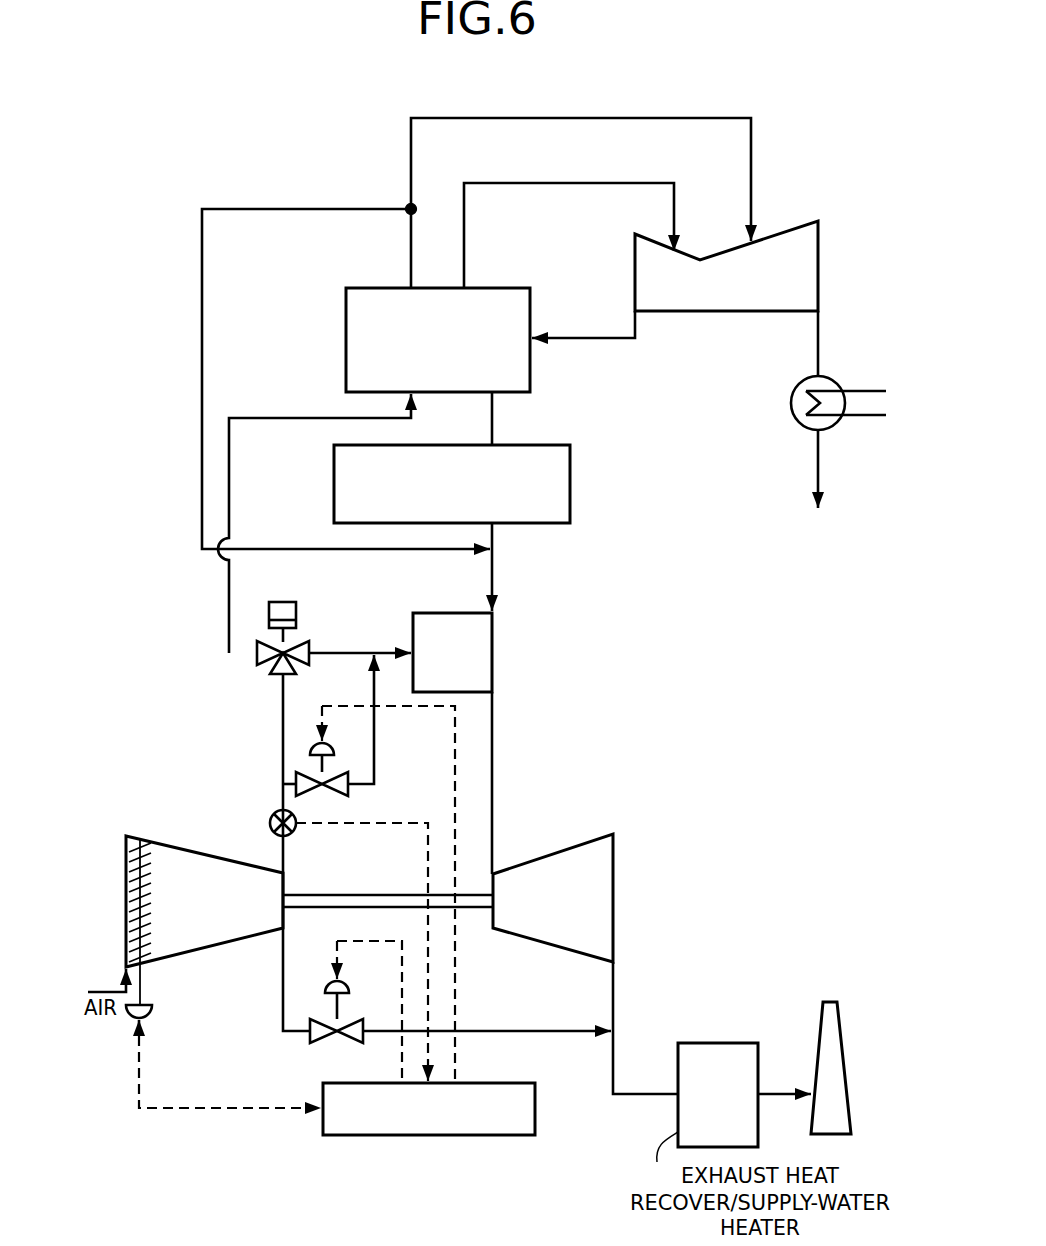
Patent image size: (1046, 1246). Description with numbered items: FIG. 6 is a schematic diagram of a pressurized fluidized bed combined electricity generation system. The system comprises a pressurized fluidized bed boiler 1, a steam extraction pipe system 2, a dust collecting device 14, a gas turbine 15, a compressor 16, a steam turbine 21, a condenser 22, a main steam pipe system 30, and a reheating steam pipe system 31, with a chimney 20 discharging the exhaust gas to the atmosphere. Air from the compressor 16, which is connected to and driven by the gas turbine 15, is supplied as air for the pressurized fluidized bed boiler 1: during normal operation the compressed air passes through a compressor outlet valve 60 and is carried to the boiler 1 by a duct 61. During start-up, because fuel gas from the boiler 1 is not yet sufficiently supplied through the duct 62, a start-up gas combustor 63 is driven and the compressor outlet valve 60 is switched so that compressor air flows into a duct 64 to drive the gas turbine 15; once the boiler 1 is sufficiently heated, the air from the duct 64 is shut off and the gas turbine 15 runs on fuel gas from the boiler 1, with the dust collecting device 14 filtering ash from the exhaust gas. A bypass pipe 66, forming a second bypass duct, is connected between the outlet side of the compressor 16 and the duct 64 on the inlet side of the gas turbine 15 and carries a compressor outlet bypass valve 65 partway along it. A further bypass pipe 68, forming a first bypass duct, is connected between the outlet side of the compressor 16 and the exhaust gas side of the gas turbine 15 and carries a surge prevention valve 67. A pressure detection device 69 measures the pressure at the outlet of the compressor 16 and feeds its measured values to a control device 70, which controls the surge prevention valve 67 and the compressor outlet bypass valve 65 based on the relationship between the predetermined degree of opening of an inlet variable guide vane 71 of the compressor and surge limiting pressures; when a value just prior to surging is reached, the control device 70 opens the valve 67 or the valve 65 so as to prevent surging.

The pressurized fluidized bed boiler 1 is at (352, 287).
The steam extraction pipe system 2 is at (202, 209).
The dust collecting device 14 is at (553, 445).
The gas turbine 15 is at (612, 862).
The compressor 16 is at (126, 883).
The chimney 20 is at (829, 1002).
The steam turbine 21 is at (800, 230).
The condenser 22 is at (838, 382).
The main steam pipe system 30 is at (524, 183).
The reheating steam pipe system 31 is at (443, 118).
The compressor outlet valve 60 is at (257, 653).
The duct 61 is at (230, 487).
The duct 62 is at (494, 760).
The start-up gas combustor 63 is at (494, 641).
The duct 64 is at (354, 653).
The compressor outlet bypass valve 65 is at (310, 743).
The bypass pipe 66 is at (374, 688).
The surge prevention valve 67 is at (320, 1045).
The bypass pipe 68 is at (543, 1031).
The pressure detection device 69 is at (270, 818).
The control device 70 is at (536, 1118).
The inlet variable guide vane 71 is at (153, 953).